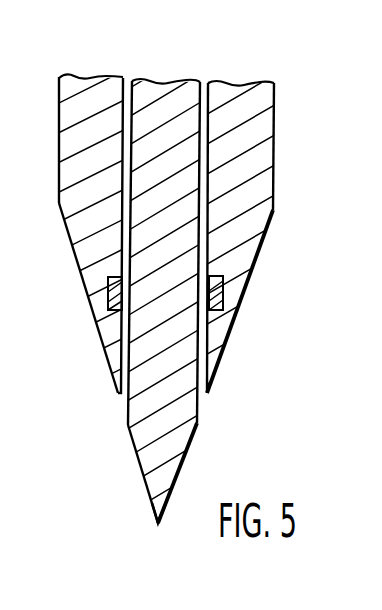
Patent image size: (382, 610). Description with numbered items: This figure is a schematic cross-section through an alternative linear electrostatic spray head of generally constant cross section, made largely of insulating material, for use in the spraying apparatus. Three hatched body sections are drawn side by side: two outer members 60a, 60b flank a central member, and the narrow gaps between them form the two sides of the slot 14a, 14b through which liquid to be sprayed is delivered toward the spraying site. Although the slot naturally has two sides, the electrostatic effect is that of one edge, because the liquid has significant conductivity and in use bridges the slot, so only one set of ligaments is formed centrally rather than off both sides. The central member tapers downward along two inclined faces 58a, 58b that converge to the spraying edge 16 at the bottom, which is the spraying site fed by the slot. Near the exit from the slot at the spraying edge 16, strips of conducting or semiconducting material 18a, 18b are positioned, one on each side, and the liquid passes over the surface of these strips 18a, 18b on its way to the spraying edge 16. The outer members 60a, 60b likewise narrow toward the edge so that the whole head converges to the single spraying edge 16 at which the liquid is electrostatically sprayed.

The slot 14a is at (125, 350).
The slot 14b is at (203, 362).
The edge 16 is at (156, 526).
The strip of conducting or semiconducting material 18a is at (118, 286).
The strip of conducting or semiconducting material 18b is at (213, 292).
The left tapered face 58a is at (140, 460).
The right tapered face 58b is at (183, 459).
The left side member 60a is at (68, 238).
The right side member 60b is at (267, 230).